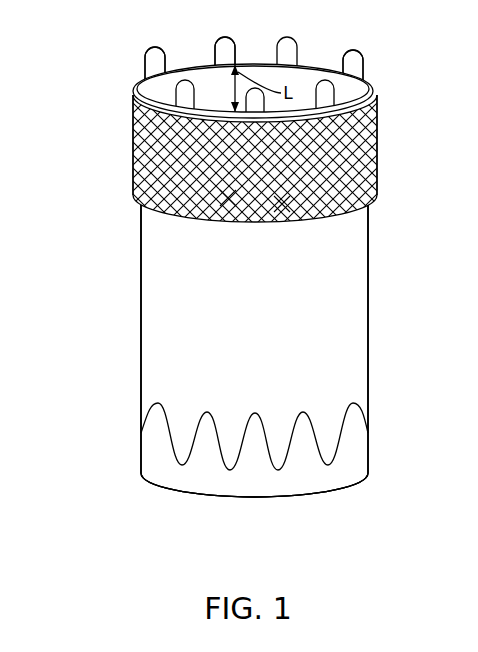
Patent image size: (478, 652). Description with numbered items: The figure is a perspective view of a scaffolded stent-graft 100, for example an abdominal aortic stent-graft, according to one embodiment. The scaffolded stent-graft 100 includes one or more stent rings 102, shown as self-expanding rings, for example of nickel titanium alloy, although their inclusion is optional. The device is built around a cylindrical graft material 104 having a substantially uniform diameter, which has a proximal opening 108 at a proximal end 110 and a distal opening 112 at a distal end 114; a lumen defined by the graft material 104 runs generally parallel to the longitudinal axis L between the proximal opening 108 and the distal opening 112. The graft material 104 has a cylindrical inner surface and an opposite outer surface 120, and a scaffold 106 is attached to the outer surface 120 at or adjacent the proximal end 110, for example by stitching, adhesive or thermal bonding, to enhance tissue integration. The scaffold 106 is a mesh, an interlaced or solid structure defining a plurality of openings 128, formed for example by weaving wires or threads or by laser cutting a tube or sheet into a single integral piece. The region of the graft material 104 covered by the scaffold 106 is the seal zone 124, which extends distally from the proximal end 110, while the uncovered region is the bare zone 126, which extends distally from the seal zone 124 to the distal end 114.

The scaffolded stent-graft 100 is at (120, 78).
The stent rings 102 is at (366, 76).
The graft material 104 is at (237, 330).
The scaffold 106 is at (133, 177).
The proximal opening 108 is at (251, 26).
The proximal end 110 is at (200, 64).
The distal opening 112 is at (165, 506).
The distal end 114 is at (262, 497).
The outer surface 120 is at (140, 322).
The seal zone 124 is at (383, 95).
The bare zone 126 is at (383, 200).
The openings 128 is at (280, 207).